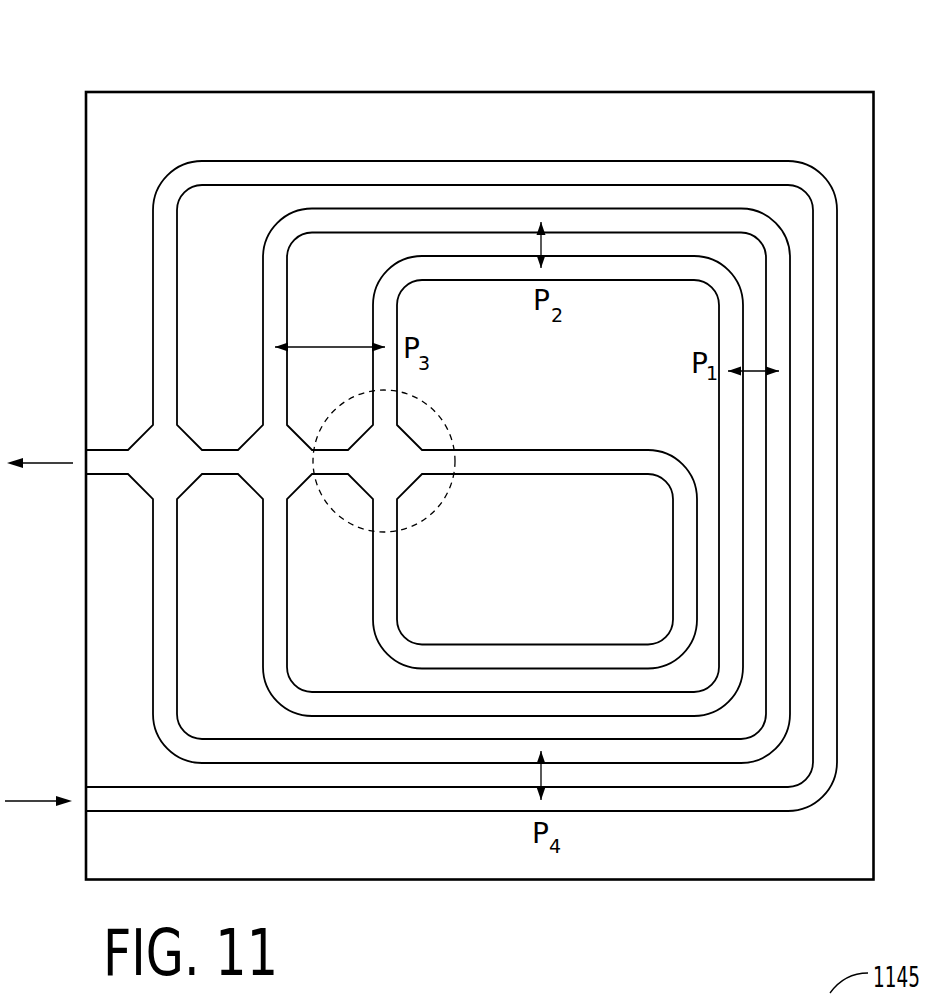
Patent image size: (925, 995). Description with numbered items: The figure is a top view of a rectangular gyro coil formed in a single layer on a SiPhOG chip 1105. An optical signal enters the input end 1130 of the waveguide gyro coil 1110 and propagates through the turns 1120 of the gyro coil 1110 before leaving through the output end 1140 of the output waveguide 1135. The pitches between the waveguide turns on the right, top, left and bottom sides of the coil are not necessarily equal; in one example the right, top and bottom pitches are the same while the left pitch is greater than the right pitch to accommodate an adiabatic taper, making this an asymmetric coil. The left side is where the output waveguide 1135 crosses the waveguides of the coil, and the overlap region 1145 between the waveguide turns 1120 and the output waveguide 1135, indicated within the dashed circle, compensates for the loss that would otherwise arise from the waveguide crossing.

The SiPhOG chip 1105 is at (722, 92).
The waveguide gyro coil 1110 is at (615, 143).
The turns 1120 is at (447, 267).
The input end 1130 is at (83, 806).
The output waveguide 1135 is at (531, 450).
The output end 1140 is at (83, 468).
The overlap region 1145 is at (437, 507).